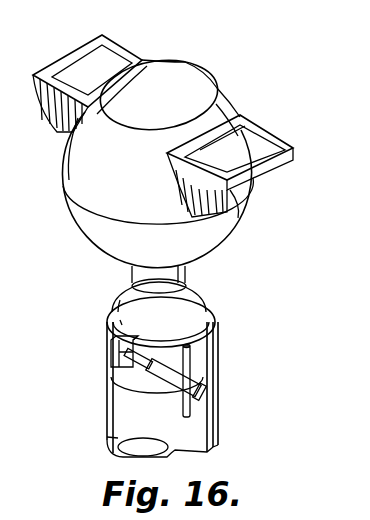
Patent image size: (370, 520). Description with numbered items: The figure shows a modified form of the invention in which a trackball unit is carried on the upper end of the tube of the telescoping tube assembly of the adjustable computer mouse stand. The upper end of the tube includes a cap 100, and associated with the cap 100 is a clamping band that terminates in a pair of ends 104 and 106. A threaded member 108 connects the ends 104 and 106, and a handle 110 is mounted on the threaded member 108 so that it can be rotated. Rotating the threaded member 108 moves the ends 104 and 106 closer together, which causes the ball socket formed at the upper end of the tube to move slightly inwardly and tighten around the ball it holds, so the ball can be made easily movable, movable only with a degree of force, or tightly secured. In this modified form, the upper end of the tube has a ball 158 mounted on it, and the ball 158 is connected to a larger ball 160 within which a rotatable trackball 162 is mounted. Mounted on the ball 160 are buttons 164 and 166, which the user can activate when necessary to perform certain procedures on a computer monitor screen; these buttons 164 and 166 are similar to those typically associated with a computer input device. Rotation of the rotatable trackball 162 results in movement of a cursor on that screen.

The ball 160 is at (238, 96).
The rotatable trackball 162 is at (170, 72).
The button 164 is at (97, 50).
The button 166 is at (262, 136).
The ball 158 is at (203, 288).
The cap 100 is at (217, 340).
The end 104 is at (108, 348).
The end 106 is at (126, 362).
The threaded member 108 is at (113, 378).
The handle 110 is at (195, 366).